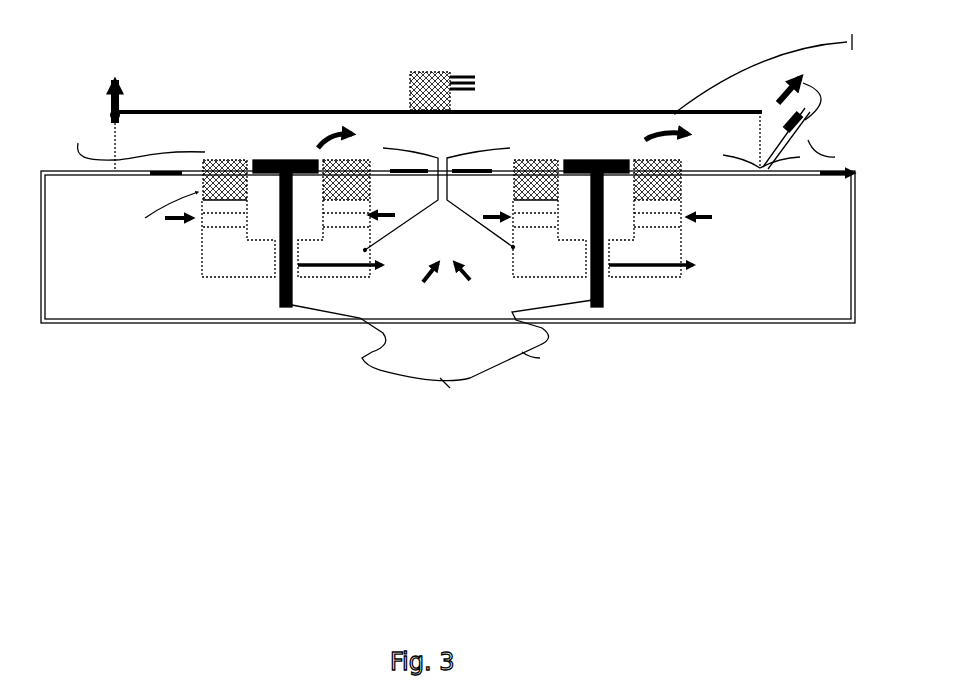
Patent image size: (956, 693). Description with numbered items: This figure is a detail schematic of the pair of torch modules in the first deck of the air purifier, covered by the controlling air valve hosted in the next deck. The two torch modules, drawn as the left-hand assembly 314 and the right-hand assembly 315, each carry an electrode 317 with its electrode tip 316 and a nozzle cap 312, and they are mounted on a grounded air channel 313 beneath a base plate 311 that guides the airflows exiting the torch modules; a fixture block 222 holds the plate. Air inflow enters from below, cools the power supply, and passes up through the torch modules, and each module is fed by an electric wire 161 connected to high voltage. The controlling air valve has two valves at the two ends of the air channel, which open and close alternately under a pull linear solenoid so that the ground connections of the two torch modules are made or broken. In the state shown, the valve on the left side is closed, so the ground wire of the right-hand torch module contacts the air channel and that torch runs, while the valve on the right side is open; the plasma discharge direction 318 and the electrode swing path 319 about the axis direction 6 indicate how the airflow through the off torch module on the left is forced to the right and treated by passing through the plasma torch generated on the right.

The rotation axis direction 6 is at (859, 43).
The electric wire connected to high voltage 161 is at (265, 322).
The fixture block 222 is at (410, 72).
The base plate 311 is at (548, 110).
The nozzle cap 312 is at (810, 82).
The gas channel housing 313 is at (440, 202).
The first electrode assembly 314 is at (210, 275).
The second electrode assembly 315 is at (680, 275).
The electrode tip 316 is at (112, 108).
The electrode 317 is at (112, 88).
The plasma discharge direction 318 is at (122, 88).
The electrode swing path 319 is at (678, 66).